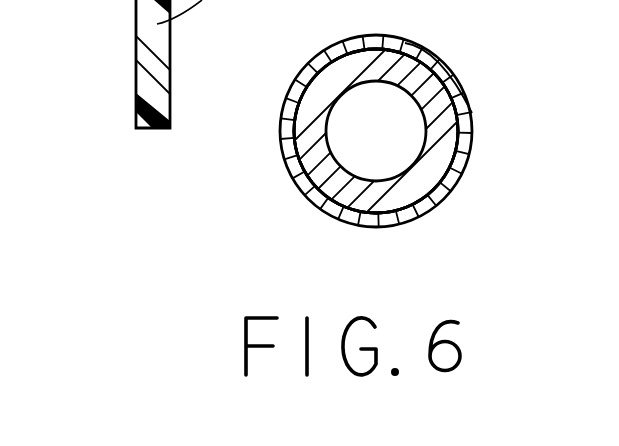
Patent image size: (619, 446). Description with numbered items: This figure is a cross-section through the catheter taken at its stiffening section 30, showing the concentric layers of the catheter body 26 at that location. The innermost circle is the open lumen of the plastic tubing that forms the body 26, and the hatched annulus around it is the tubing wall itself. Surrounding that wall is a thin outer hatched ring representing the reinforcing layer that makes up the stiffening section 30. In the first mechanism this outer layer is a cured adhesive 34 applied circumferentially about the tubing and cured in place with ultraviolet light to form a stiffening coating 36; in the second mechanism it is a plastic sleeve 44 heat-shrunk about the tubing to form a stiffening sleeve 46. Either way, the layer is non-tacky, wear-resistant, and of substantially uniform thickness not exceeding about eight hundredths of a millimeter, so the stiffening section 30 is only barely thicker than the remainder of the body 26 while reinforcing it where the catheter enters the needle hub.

The body section 26 is at (371, 92).
The stiffening section 30 is at (472, 128).
The cured adhesive 34 is at (142, 300).
The stiffening coating 36 is at (331, 147).
The plastic sleeve 44 is at (298, 166).
The stiffening sleeve 46 is at (331, 166).